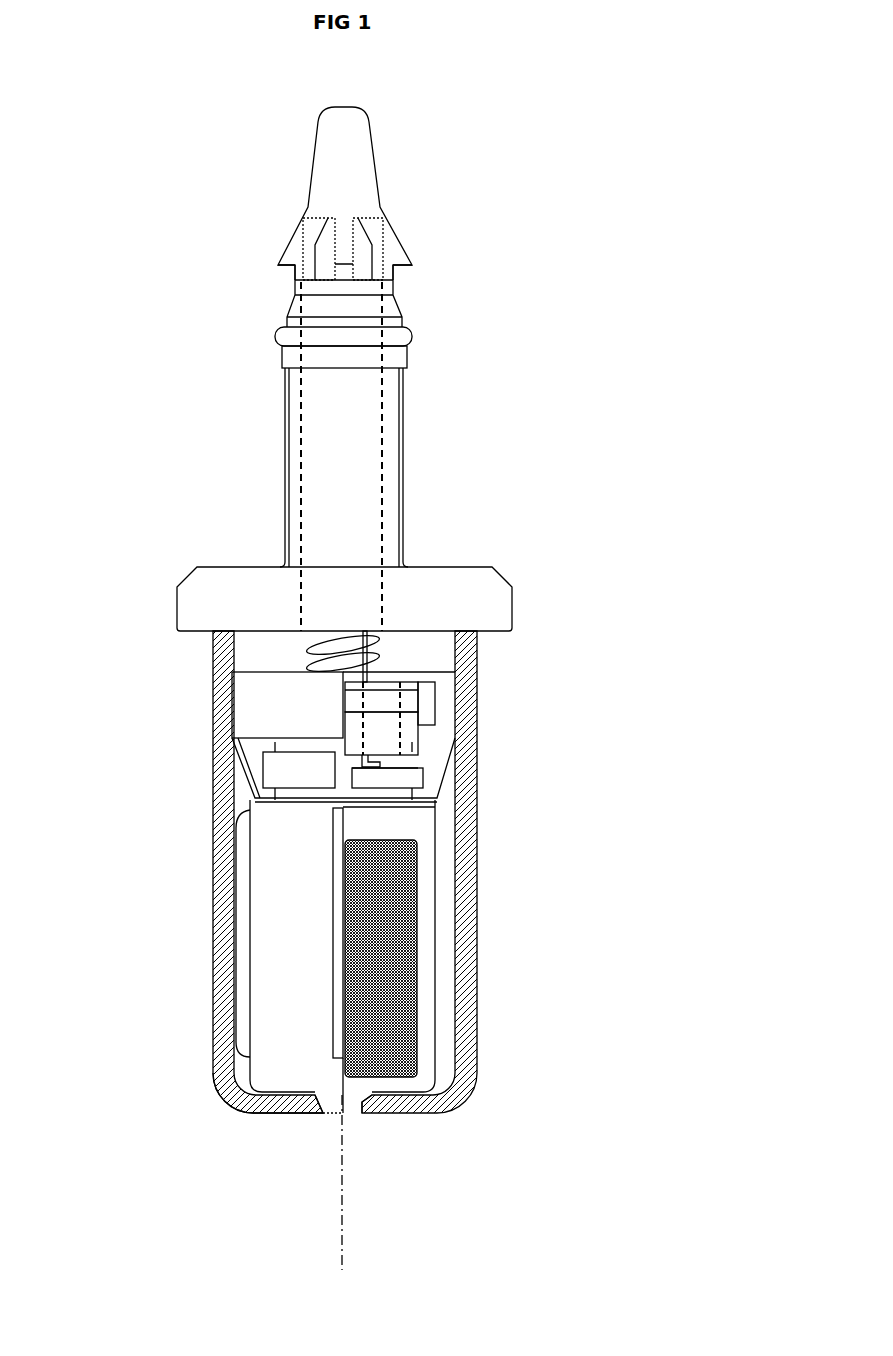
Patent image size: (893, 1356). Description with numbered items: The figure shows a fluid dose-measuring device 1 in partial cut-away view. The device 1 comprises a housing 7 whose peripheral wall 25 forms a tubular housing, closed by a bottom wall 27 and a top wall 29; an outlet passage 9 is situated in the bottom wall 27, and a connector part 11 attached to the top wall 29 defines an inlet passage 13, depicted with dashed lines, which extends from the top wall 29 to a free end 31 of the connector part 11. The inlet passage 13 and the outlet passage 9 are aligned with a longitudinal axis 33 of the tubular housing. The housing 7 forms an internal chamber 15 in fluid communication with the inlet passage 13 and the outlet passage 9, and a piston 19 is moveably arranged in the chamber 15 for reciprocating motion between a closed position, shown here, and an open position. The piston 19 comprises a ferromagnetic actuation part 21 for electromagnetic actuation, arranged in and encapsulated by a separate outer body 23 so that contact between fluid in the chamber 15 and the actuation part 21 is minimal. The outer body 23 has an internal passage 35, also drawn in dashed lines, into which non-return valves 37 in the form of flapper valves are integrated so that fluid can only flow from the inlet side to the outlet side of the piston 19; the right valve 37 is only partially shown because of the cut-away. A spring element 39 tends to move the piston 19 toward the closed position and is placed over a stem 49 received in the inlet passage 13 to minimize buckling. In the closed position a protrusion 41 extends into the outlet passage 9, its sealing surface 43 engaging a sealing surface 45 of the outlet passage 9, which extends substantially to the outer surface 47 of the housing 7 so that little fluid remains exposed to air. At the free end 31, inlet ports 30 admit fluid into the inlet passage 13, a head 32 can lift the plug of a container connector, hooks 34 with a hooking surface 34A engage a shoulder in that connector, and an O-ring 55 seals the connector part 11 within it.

The fluid dose-measuring device 1 is at (548, 438).
The housing 7 is at (462, 697).
The outlet passage 9 is at (332, 1127).
The connector part 11 is at (288, 500).
The inlet passage 13 is at (345, 443).
The internal chamber 15 is at (442, 863).
The piston 19 is at (275, 908).
The ferromagnetic actuation part 21 is at (388, 980).
The outer body 23 is at (427, 850).
The peripheral wall 25 is at (218, 845).
The bottom wall 27 is at (250, 1103).
The top wall 29 is at (240, 577).
The inlet ports 30 is at (313, 248).
The free end 31 is at (395, 202).
The head 32 is at (332, 143).
The longitudinal axis 33 is at (342, 1252).
The hooks 34 is at (290, 255).
The hooking surface 34A is at (288, 267).
The internal passage 35 is at (388, 732).
The non-return valves 37 is at (280, 763).
The spring element 39 is at (375, 660).
The protrusion 41 is at (343, 1102).
The sealing surface 43 is at (315, 1093).
The sealing surface 45 is at (367, 1103).
The outer surface 47 is at (277, 1117).
The stem 49 is at (333, 652).
The O-ring 55 is at (283, 337).